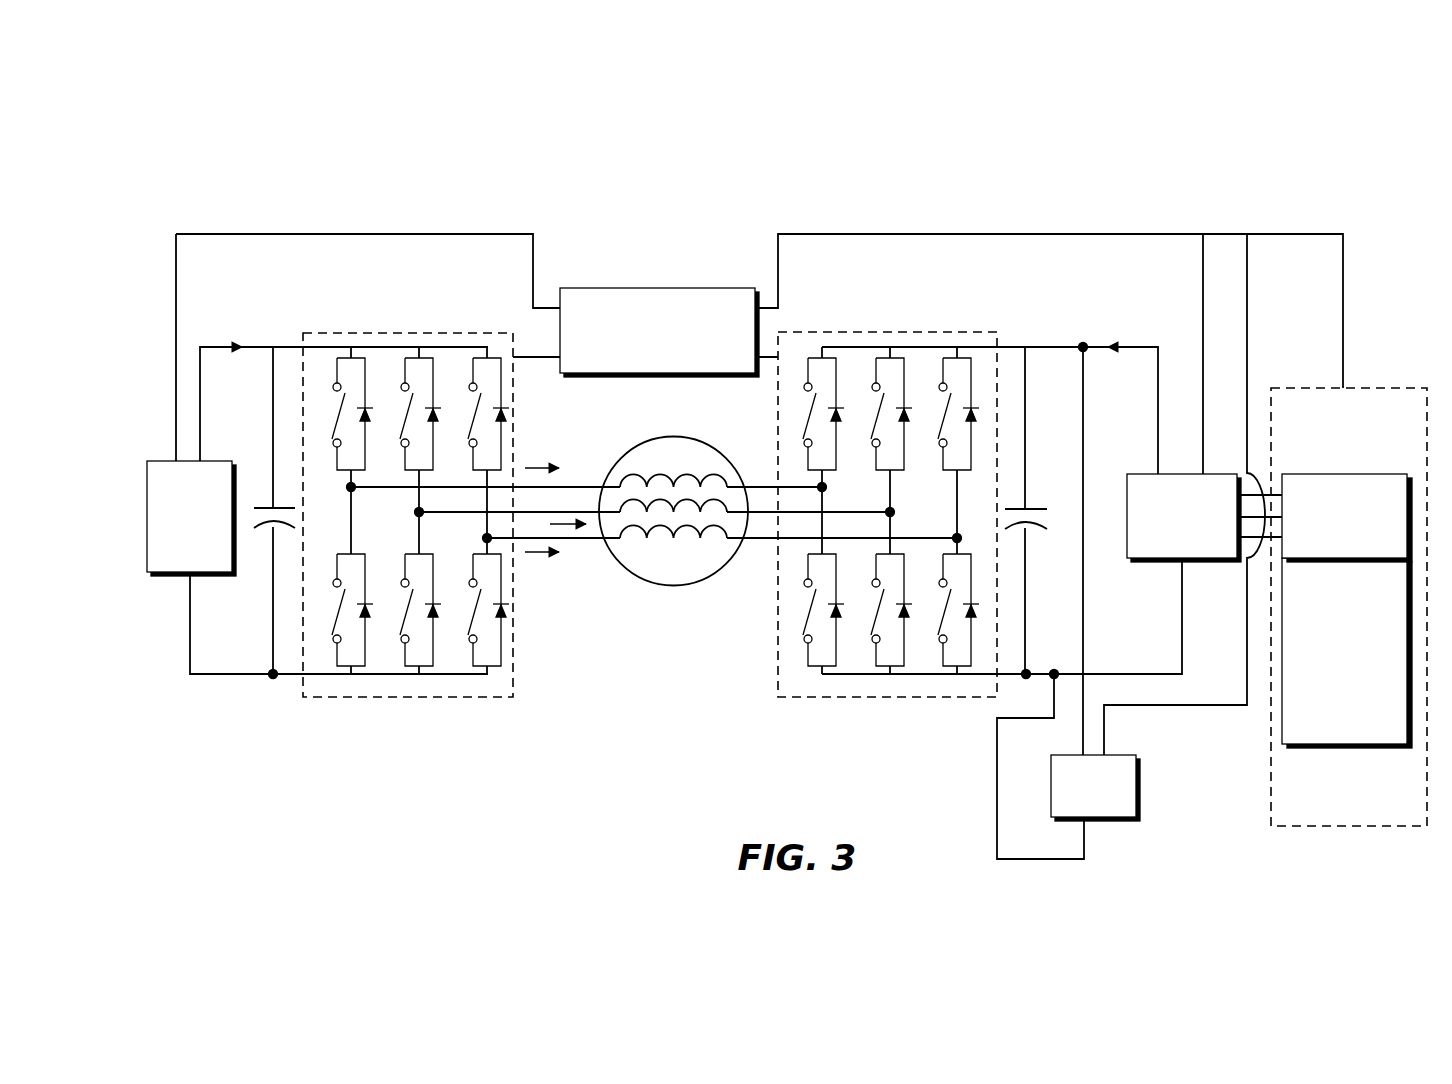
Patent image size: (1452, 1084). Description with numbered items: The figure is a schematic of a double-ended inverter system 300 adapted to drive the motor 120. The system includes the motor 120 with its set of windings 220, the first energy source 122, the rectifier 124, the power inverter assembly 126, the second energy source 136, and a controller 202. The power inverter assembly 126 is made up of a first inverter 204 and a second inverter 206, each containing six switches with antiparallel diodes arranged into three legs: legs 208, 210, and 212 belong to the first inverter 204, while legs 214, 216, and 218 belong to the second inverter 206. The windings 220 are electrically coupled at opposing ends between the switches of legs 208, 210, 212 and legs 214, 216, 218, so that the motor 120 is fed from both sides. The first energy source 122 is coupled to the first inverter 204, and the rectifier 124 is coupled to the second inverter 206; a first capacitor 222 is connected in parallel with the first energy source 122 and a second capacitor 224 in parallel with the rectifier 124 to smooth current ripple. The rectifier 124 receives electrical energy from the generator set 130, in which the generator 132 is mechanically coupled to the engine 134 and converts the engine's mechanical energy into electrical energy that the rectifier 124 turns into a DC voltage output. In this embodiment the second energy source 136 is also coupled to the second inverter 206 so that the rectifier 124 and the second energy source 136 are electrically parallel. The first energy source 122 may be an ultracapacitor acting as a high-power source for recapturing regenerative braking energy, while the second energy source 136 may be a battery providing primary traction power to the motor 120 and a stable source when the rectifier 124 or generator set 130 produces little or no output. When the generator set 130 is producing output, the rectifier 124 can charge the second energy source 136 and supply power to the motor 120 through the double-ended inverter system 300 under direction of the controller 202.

The double-ended inverter system 300 is at (1222, 195).
The motor 120 is at (654, 511).
The first energy source 122 is at (163, 460).
The rectifier 124 is at (1193, 562).
The power inverter assembly 126 is at (414, 316).
The generator set 130 is at (1380, 388).
The generator 132 is at (1330, 474).
The engine 134 is at (1318, 748).
The second energy source 136 is at (1113, 820).
The controller 202 is at (688, 288).
The first inverter 204 is at (323, 332).
The second inverter 206 is at (977, 332).
The leg 208 is at (352, 684).
The leg 210 is at (420, 684).
The leg 212 is at (488, 684).
The leg 214 is at (823, 684).
The leg 216 is at (891, 684).
The leg 218 is at (958, 684).
The windings 220 is at (687, 527).
The first capacitor 222 is at (263, 520).
The second capacitor 224 is at (1038, 525).